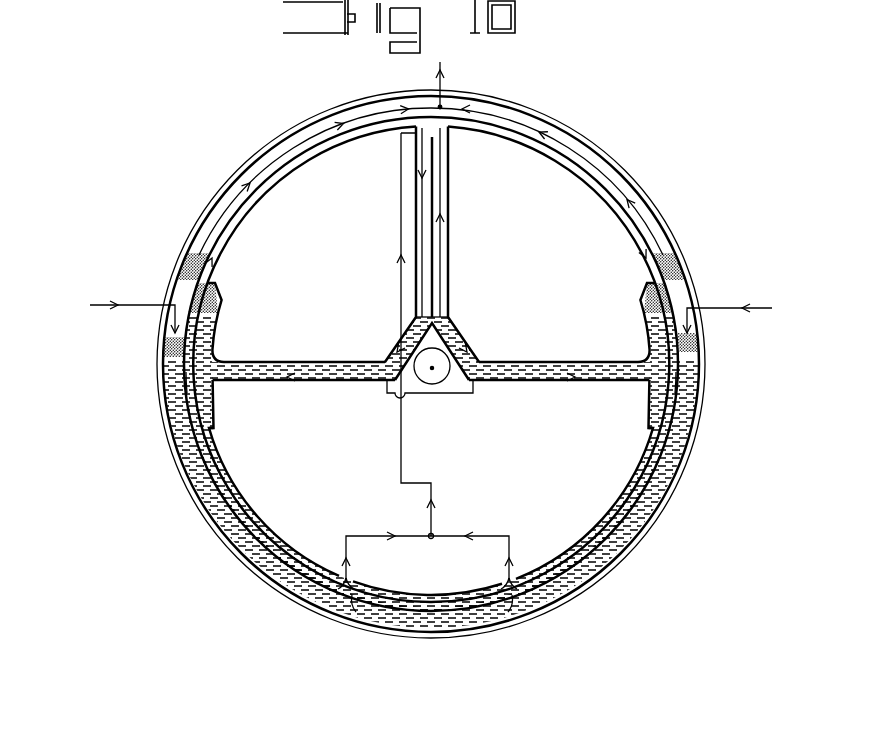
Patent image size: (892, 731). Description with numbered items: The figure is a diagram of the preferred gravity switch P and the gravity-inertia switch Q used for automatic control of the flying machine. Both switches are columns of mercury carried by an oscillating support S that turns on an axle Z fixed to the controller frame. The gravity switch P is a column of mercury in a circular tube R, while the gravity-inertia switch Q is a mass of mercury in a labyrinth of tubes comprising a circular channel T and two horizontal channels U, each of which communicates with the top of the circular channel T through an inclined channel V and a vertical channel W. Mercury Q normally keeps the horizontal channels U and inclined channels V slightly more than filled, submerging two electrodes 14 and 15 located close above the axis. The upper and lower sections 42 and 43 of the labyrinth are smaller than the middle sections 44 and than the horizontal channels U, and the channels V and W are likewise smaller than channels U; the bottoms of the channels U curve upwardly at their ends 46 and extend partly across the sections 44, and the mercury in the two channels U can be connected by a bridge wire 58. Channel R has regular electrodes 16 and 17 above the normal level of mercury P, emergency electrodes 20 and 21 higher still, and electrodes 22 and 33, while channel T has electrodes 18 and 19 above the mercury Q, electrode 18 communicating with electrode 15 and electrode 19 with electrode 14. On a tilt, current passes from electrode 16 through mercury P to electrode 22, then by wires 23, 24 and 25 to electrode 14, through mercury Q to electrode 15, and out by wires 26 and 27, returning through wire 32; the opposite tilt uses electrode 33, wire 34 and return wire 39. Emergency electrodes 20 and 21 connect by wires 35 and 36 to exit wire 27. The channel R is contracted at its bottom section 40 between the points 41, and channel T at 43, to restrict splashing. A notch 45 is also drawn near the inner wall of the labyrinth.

The electrode 14 is at (416, 316).
The electrode 15 is at (449, 316).
The electrode 16 is at (170, 341).
The electrode 17 is at (693, 337).
The electrode 18 is at (205, 298).
The electrode 19 is at (655, 298).
The emergency electrode 20 is at (195, 262).
The emergency electrode 21 is at (667, 262).
The electrode 22 is at (353, 605).
The wire 23 is at (347, 536).
The conduit wire 24 is at (401, 232).
The wire 25 is at (429, 263).
The wire 26 is at (441, 272).
The exit wire 27 is at (444, 84).
The wire 32 is at (103, 307).
The electrode 33 is at (517, 606).
The wire 34 is at (500, 535).
The wire 35 is at (290, 149).
The wire 36 is at (573, 142).
The wire 39 is at (760, 310).
The bottom section 40 is at (432, 628).
The points 41 is at (197, 442).
The upper section 42 is at (288, 176).
The lower section 43 is at (402, 603).
The middle sections 44 is at (222, 384).
The inner wall notch 45 is at (213, 432).
The ends 46 is at (182, 373).
The bridge wire 58 is at (448, 395).
The vertical channel W is at (418, 193).
The circular channel T is at (590, 188).
The circular tube R is at (637, 181).
The inclined channel V is at (378, 352).
The horizontal channel U is at (322, 380).
The axle Z is at (432, 372).
The oscillating support S is at (486, 468).
The gravity switch P is at (164, 431).
The gravity-inertia switch Q is at (212, 470).